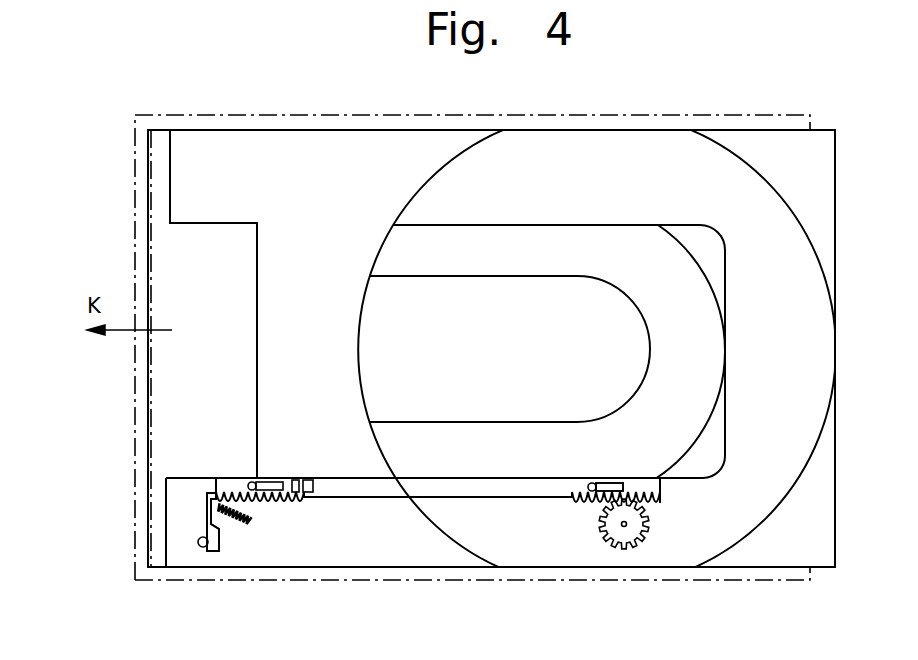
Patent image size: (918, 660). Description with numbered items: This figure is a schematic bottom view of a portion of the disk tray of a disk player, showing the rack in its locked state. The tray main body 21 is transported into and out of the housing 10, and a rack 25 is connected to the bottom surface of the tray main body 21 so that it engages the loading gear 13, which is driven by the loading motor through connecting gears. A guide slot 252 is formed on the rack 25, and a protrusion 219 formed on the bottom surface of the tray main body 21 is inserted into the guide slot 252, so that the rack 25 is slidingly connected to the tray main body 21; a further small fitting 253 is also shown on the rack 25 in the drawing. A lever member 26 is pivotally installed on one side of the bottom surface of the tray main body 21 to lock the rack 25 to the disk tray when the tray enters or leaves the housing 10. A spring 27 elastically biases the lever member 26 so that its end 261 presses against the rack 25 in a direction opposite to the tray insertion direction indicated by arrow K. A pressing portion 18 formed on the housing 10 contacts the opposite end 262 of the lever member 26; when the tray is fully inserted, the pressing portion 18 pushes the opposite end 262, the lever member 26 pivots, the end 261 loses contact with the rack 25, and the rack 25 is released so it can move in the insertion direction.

The housing 10 is at (143, 153).
The tray main body 21 is at (258, 140).
The rack 25 is at (349, 515).
The protrusion 219 is at (250, 480).
The guide slot 252 is at (620, 483).
The stopper 253 is at (302, 478).
The loading gear 13 is at (627, 545).
The lever member 26 is at (144, 517).
The end of the lever member 261 is at (208, 493).
The opposite end of the lever member 262 is at (215, 550).
The pressing portion 18 is at (198, 541).
The spring 27 is at (238, 520).